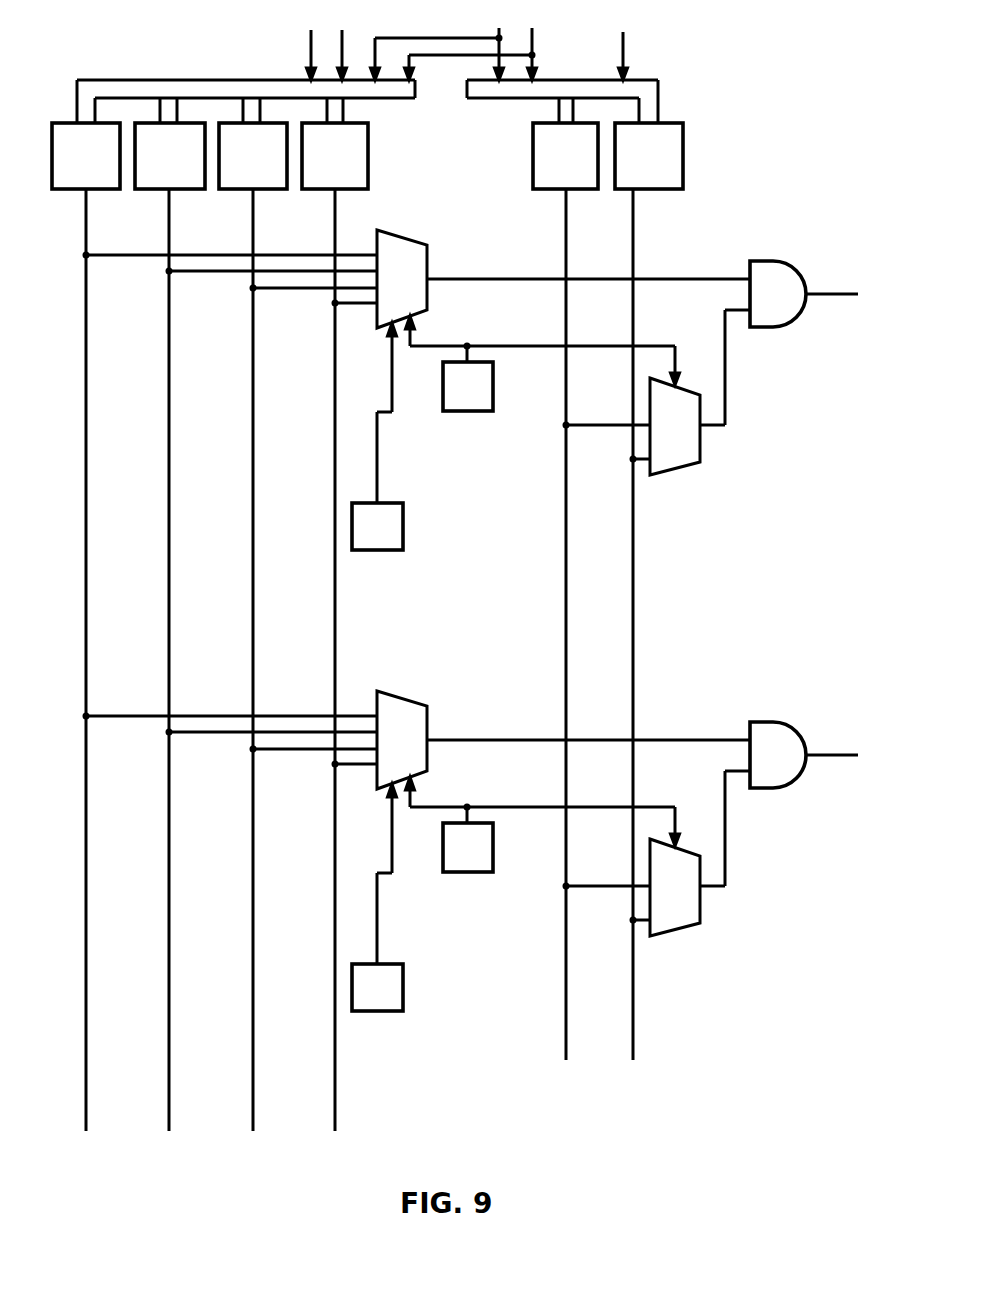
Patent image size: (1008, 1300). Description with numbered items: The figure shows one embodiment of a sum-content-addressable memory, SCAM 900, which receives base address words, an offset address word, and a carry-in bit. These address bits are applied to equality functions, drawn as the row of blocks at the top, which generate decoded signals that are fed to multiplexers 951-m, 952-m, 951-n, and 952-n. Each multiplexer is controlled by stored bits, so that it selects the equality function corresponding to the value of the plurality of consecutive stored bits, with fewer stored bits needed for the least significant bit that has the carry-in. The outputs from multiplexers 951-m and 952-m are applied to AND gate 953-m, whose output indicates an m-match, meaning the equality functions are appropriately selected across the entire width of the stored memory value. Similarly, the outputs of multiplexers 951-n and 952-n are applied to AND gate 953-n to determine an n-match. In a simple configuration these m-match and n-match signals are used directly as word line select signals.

The sum-content-addressable memory (SCAM) 900 is at (467, 572).
The multiplexer 951-m is at (423, 259).
The multiplexer 952-m is at (676, 461).
The AND gate 953-m is at (766, 266).
The multiplexer 951-n is at (423, 720).
The multiplexer 952-n is at (676, 922).
The AND gate 953-n is at (766, 727).